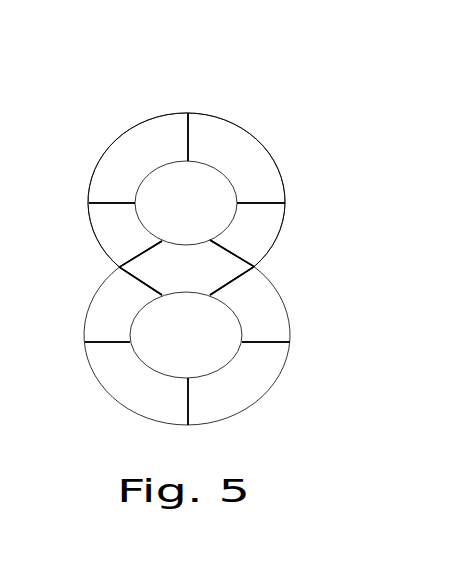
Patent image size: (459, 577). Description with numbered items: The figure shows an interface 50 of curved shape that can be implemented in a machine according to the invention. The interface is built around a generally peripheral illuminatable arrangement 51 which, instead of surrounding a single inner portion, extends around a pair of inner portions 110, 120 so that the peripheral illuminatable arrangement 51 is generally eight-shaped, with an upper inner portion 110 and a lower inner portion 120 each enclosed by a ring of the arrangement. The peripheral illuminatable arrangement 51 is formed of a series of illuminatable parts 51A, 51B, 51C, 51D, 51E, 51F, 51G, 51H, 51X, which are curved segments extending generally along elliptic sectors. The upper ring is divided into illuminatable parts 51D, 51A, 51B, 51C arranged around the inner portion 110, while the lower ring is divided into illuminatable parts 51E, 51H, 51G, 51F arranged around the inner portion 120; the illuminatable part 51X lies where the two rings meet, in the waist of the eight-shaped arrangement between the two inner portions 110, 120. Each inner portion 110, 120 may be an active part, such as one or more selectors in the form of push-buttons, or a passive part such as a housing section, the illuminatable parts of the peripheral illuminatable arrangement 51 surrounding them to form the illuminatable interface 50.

The wheel assembly 50 is at (102, 130).
The peripheral illuminatable arrangement 51 is at (260, 140).
The illuminatable part 51A is at (255, 187).
The illuminatable part 51B is at (252, 228).
The illuminatable part 51C is at (112, 228).
The illuminatable part 51D is at (105, 180).
The illuminatable part 51E is at (100, 312).
The illuminatable part 51F is at (100, 369).
The illuminatable part 51G is at (248, 393).
The illuminatable part 51H is at (262, 323).
The illuminatable part 51X is at (200, 263).
The inner portion 110 is at (217, 193).
The inner portion 120 is at (210, 320).